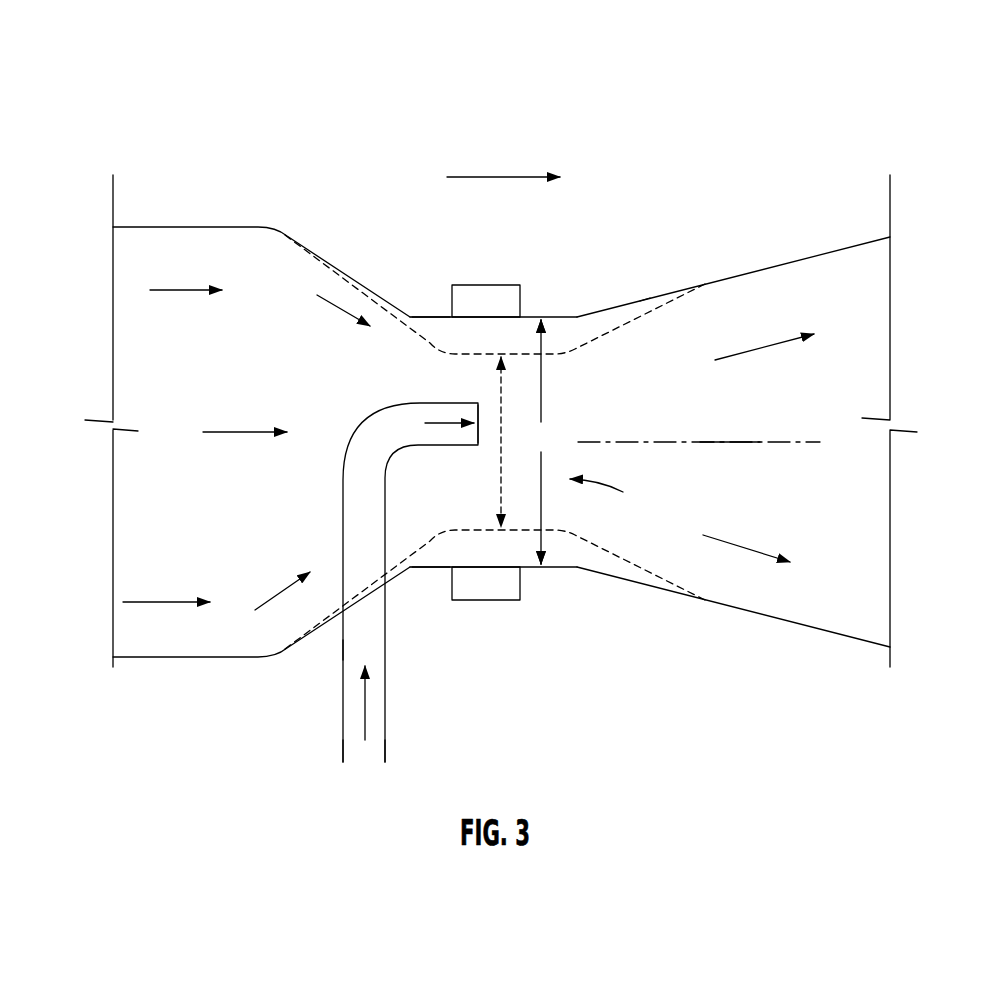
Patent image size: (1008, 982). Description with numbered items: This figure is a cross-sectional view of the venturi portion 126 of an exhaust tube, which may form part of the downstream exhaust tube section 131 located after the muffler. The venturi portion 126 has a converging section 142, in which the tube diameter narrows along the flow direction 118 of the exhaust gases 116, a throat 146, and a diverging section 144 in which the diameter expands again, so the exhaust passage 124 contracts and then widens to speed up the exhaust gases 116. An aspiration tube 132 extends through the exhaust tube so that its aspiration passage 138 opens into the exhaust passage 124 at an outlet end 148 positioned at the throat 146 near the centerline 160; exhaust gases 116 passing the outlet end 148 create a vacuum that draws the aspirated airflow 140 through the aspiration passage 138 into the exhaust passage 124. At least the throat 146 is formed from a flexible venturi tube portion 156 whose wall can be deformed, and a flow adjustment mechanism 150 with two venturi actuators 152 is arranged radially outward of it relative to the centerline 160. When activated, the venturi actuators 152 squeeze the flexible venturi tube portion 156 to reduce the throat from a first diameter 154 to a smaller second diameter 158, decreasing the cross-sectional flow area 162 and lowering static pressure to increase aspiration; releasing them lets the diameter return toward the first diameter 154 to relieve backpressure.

The exhaust gases 116 is at (182, 290).
The flow direction 118 is at (490, 177).
The exhaust passage 124 is at (807, 417).
The venturi portion 126 is at (104, 103).
The downstream exhaust tube section 131 is at (643, 298).
The aspiration tube 132 is at (340, 737).
The aspiration passage 138 is at (349, 640).
The aspirated airflow 140 is at (440, 423).
The converging section 142 is at (312, 250).
The diverging section 144 is at (766, 268).
The throat 146 is at (558, 312).
The outlet end 148 is at (477, 437).
The flow adjustment mechanism 150 is at (476, 240).
The venturi actuator 152 is at (488, 285).
The first diameter 154 is at (541, 442).
The flexible venturi tube portion 156 is at (440, 317).
The second diameter 158 is at (498, 472).
The centerline 160 is at (598, 441).
The cross-sectional flow area 162 is at (616, 491).